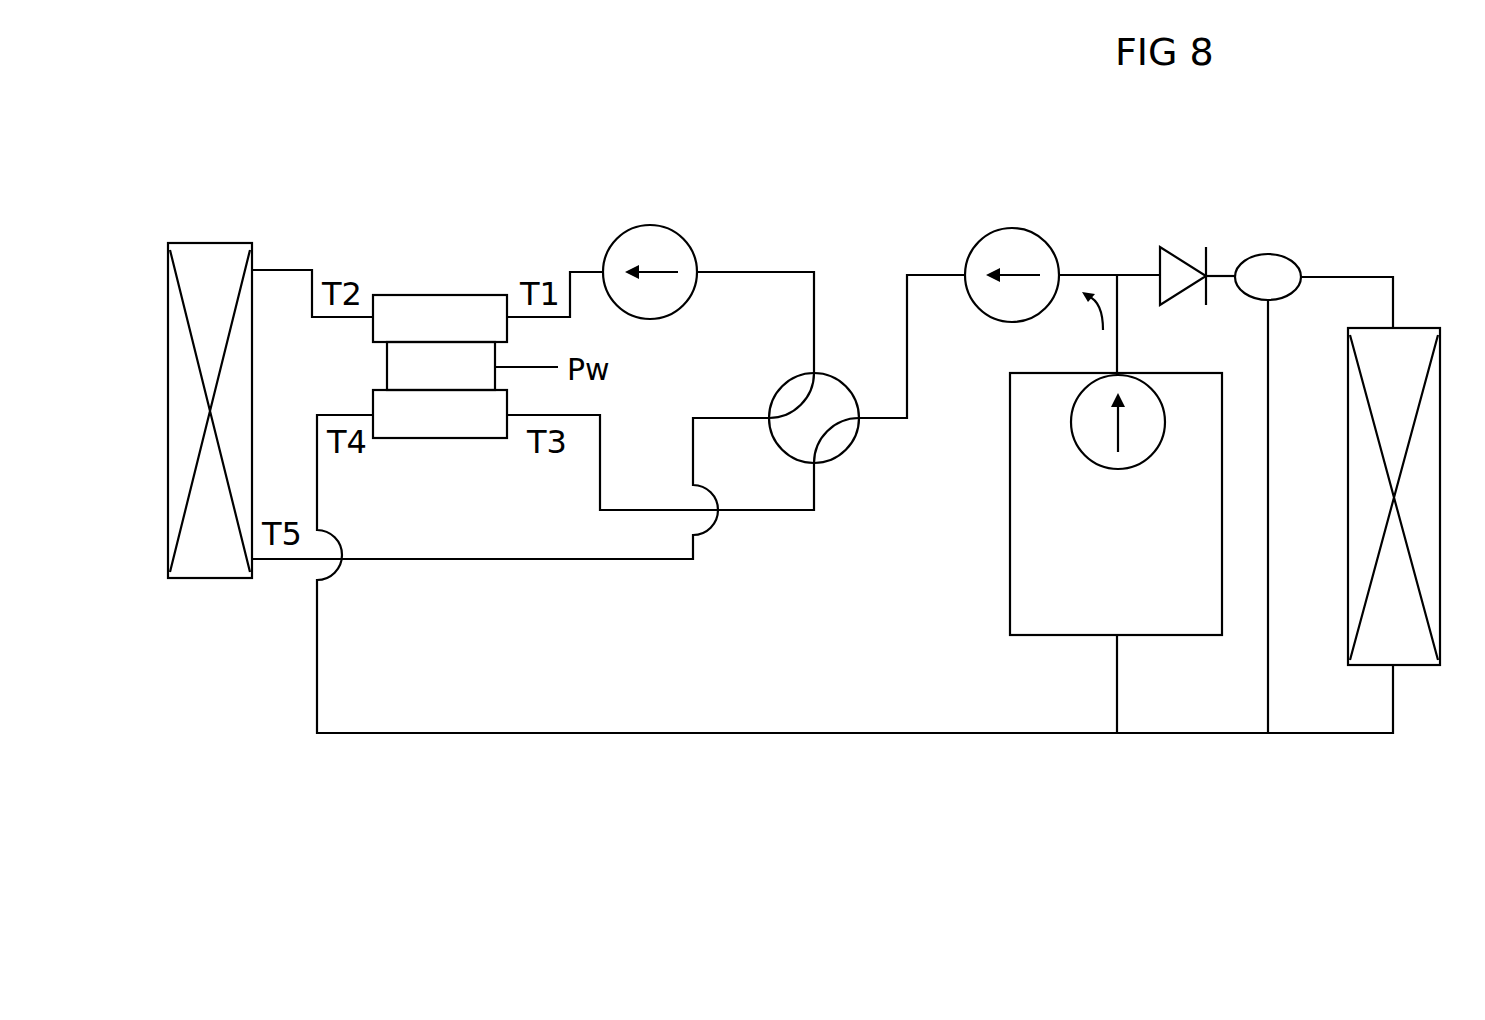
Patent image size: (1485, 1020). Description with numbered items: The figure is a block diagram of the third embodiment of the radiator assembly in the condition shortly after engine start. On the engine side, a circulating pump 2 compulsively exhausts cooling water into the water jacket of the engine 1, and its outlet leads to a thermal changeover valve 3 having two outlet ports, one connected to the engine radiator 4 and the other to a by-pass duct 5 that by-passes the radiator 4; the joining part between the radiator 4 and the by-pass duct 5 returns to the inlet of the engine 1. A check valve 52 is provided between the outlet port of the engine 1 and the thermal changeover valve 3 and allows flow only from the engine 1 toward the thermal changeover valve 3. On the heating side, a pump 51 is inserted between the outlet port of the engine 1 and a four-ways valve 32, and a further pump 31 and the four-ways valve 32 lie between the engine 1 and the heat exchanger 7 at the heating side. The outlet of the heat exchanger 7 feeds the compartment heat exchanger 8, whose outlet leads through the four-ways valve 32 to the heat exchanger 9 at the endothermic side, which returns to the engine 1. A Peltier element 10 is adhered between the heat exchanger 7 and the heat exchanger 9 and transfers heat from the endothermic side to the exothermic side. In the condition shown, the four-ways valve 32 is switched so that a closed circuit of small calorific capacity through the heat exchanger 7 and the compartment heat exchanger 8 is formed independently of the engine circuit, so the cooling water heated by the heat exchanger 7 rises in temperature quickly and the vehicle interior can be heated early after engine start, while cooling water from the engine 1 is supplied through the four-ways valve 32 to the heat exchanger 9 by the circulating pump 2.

The engine 1 is at (1025, 583).
The circulating pump 2 is at (1140, 408).
The thermal changeover valve 3 is at (1278, 272).
The engine radiator 4 is at (1420, 328).
The by-pass duct 5 is at (1270, 700).
The heat exchanger 7 is at (445, 295).
The compartment heat exchanger 8 is at (202, 243).
The heat exchanger at the endothermic side 9 is at (443, 438).
The Peltier element 10 is at (387, 370).
The pump 31 is at (688, 243).
The four-ways valve 32 is at (785, 390).
The pump 51 is at (1025, 228).
The check valve 52 is at (1183, 245).